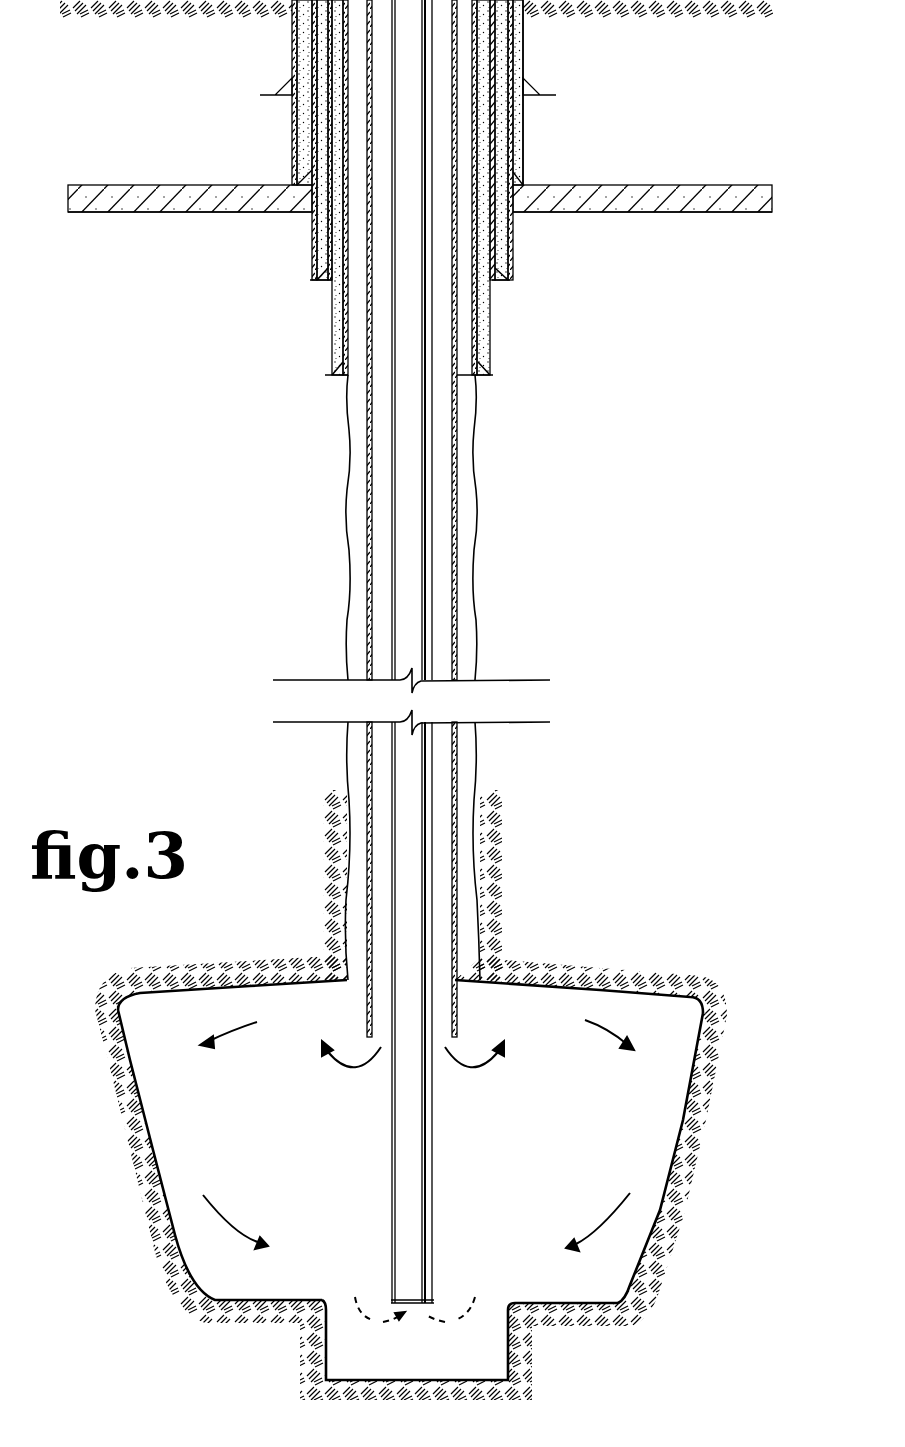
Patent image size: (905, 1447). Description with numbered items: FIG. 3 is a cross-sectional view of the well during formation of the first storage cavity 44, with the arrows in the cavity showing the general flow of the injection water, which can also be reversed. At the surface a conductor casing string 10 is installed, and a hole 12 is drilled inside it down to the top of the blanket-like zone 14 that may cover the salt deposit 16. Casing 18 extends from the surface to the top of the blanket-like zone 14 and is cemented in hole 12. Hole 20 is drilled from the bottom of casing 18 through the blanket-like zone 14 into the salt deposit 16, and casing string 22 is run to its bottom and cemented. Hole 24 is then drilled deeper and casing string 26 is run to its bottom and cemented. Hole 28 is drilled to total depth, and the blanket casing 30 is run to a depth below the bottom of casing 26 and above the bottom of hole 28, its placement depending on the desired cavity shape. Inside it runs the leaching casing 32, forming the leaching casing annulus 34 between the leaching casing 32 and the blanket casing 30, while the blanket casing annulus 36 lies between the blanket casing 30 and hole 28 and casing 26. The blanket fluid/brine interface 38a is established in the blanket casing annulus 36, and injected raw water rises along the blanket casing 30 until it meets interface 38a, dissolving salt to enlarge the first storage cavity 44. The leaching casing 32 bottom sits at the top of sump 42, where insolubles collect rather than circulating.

The conductor casing string 10 is at (523, 50).
The hole 12 is at (518, 117).
The blanket-like zone 14 is at (640, 188).
The salt deposit 16 is at (692, 230).
The casing 18 is at (508, 146).
The hole 20 is at (492, 265).
The casing string 22 is at (483, 243).
The hole 24 is at (493, 305).
The casing string 26 is at (475, 355).
The hole 28 is at (475, 425).
The blanket casing 30 is at (455, 453).
The leaching casing 32 is at (435, 490).
The leaching casing annulus 34 is at (442, 535).
The blanket casing annulus 36 is at (465, 578).
The interface 38a is at (470, 980).
The sump 42 is at (517, 1352).
The first storage cavity 44 is at (683, 1120).